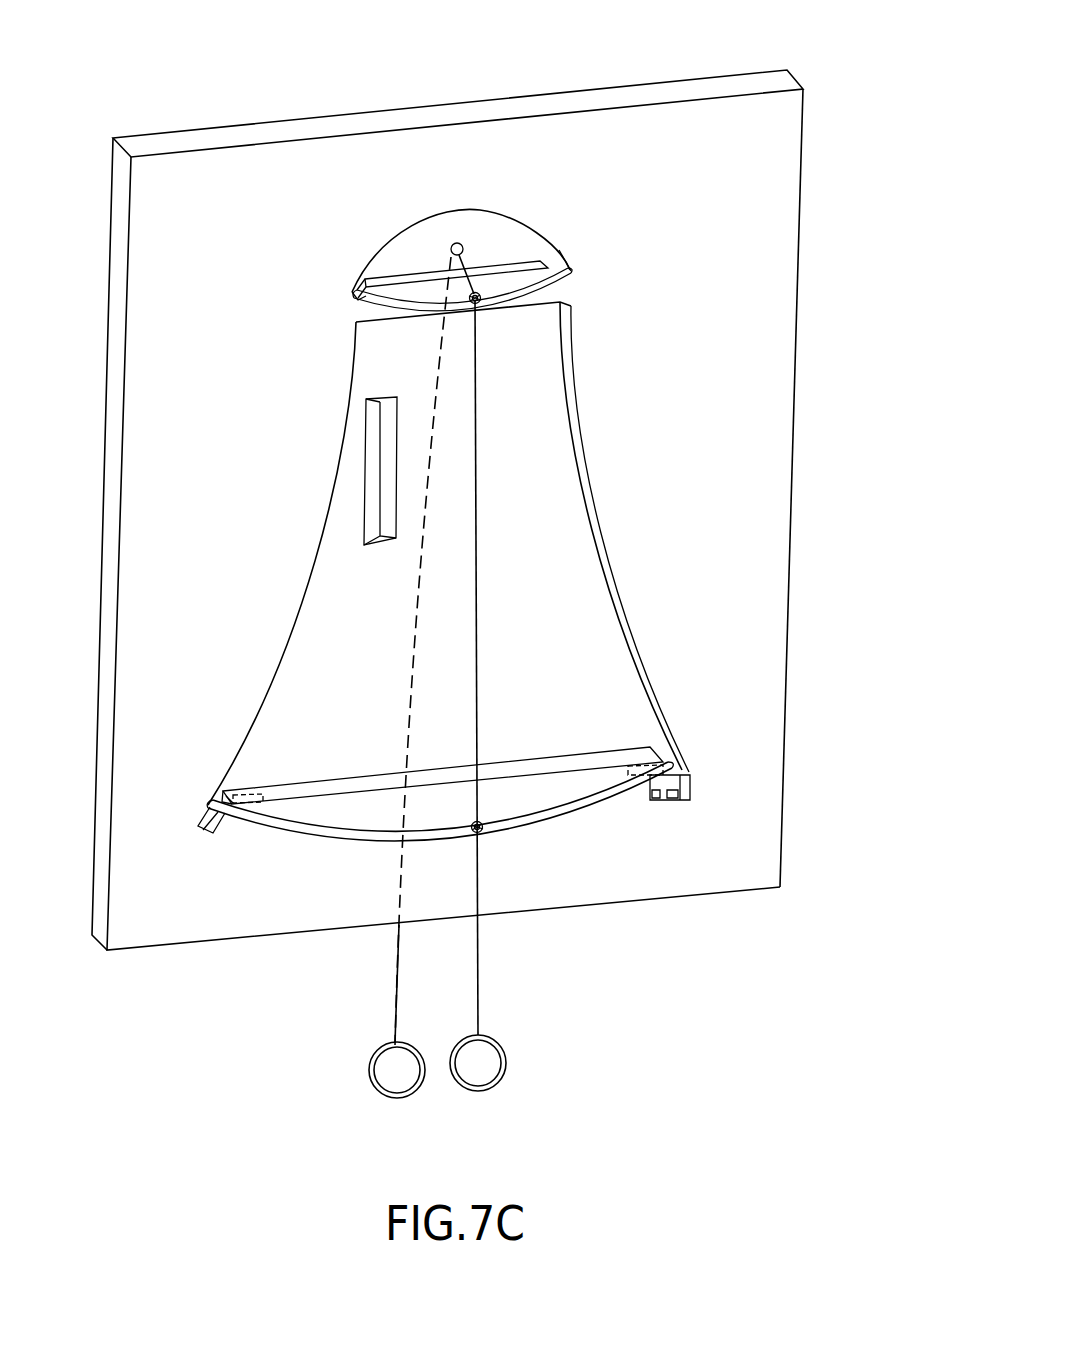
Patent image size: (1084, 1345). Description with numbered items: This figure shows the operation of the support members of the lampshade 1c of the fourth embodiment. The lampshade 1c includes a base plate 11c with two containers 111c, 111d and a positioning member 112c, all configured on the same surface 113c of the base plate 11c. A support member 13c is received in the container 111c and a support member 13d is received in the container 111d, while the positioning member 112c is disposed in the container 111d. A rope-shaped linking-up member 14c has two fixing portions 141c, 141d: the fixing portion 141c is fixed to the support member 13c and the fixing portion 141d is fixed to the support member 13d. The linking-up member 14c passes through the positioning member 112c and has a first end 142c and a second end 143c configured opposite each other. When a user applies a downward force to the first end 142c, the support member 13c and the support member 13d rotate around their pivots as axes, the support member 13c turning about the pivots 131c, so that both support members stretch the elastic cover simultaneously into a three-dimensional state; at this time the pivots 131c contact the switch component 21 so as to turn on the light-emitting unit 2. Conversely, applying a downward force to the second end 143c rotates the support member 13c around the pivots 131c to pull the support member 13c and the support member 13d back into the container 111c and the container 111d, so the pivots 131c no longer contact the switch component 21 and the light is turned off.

The lampshade 1c is at (716, 76).
The base plate 11c is at (793, 468).
The surface 113c is at (772, 148).
The container 111d is at (400, 252).
The support member 13d is at (562, 282).
The fixing portion 141d is at (480, 294).
The container 111c is at (555, 545).
The light-emitting unit 2 is at (376, 462).
The support member 13c is at (593, 823).
The pivots 131c is at (252, 795).
The switch component 21 is at (681, 786).
The fixing portion 141c is at (483, 824).
The linking-up member 14c is at (478, 392).
The positioning member 112c is at (462, 245).
The first end 142c is at (480, 975).
The second end 143c is at (397, 985).